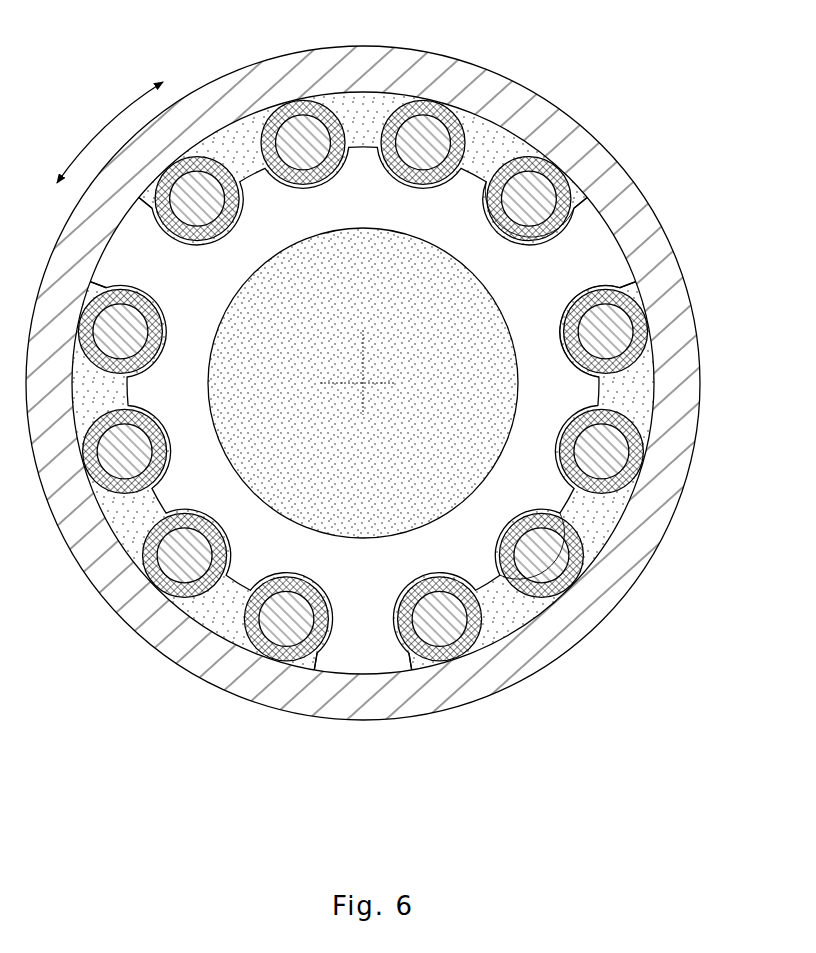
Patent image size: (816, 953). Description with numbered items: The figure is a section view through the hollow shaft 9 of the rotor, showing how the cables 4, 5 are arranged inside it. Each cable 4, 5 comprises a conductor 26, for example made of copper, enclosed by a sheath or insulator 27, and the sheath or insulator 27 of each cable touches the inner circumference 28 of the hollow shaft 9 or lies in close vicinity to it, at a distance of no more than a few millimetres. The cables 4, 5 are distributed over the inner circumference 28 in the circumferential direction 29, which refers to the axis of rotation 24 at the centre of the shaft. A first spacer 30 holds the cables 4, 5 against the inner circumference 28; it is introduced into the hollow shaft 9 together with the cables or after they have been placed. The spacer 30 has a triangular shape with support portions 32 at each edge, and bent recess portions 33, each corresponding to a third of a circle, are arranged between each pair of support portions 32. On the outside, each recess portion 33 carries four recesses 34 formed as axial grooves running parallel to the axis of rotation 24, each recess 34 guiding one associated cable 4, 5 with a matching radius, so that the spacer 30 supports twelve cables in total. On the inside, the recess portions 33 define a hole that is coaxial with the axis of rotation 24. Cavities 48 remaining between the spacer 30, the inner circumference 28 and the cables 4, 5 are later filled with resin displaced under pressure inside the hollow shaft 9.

The cable 4 is at (433, 96).
The cable 5 is at (482, 650).
The hollow shaft 9 is at (662, 212).
The axis of rotation 24 is at (378, 362).
The conductor 26 is at (487, 202).
The sheath or insulator 27 is at (565, 180).
The inner circumference 28 is at (613, 207).
The circumferential direction 29 is at (100, 123).
The first spacer 30 is at (361, 677).
The support portion 32 is at (151, 267).
The recess portion 33 is at (376, 208).
The recess 34 is at (163, 578).
The cavity 48 is at (640, 290).